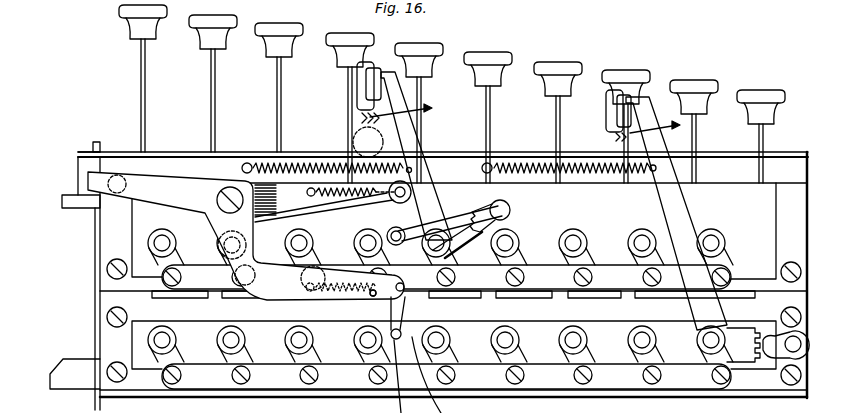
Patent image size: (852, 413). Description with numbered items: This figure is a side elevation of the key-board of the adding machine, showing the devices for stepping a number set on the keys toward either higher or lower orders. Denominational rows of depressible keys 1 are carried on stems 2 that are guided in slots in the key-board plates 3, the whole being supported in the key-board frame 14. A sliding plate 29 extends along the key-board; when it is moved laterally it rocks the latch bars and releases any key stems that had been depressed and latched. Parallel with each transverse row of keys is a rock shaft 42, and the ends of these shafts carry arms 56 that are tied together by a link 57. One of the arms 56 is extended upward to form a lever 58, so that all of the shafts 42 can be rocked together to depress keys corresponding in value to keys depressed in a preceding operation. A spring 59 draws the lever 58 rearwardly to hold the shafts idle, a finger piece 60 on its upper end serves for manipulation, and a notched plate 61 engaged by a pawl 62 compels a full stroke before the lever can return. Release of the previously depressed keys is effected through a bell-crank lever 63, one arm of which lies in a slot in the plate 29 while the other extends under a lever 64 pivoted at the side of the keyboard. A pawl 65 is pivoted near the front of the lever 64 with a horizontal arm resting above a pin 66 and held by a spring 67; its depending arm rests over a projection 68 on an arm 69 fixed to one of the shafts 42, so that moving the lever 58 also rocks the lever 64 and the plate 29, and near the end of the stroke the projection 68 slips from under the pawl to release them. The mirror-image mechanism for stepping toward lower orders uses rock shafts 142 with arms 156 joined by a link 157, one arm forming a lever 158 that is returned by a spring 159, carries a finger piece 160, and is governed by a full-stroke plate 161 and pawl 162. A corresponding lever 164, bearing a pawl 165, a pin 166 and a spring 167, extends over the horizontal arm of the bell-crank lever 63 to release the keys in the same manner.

The depressible keys 1 is at (207, 32).
The key stems 2 is at (210, 95).
The key-board plates 3 is at (235, 297).
The keyboard frame 14 is at (429, 209).
The sliding plate 29 is at (83, 147).
The rock shaft 42 is at (580, 241).
The arms 56 is at (566, 260).
The link 57 is at (446, 277).
The lever 58 is at (404, 130).
The spring 59 is at (316, 167).
The finger piece 60 is at (357, 85).
The notched plate 61 is at (457, 237).
The pawl 62 is at (503, 230).
The bell-crank lever 63 is at (97, 143).
The lever 64 is at (351, 196).
The pawl 65 is at (433, 215).
The pin 66 is at (373, 195).
The spring 67 is at (327, 185).
The projection 68 is at (397, 247).
The arm 69 is at (404, 240).
The rock shafts 142 is at (446, 338).
The arms 156 is at (525, 355).
The link 157 is at (446, 376).
The lever 158 is at (682, 210).
The spring 159 is at (574, 172).
The finger piece 160 is at (614, 112).
The plate 161 is at (740, 350).
The pawl 162 is at (785, 356).
The lever 164 is at (260, 262).
The pawl 165 is at (474, 302).
The pin 166 is at (373, 295).
The spring 167 is at (317, 267).